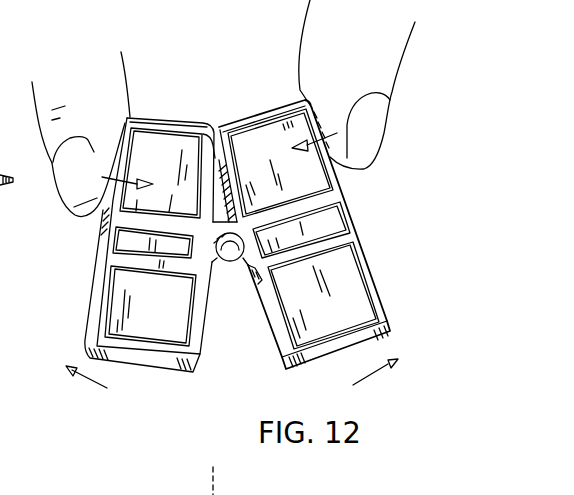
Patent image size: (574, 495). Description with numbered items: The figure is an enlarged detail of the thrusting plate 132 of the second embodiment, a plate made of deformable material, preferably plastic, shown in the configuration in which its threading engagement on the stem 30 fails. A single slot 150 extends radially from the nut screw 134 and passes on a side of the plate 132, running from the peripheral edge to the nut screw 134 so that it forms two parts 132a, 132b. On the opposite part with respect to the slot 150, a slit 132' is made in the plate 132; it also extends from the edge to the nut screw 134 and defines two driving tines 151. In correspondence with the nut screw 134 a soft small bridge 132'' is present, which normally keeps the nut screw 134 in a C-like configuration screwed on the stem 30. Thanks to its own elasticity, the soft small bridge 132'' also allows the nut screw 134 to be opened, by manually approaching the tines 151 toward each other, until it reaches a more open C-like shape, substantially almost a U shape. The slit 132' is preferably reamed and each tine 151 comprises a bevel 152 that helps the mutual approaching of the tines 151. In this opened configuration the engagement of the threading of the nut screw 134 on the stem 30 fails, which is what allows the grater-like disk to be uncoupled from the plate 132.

The stem 30 is at (17, 210).
The thrusting plate 132 is at (215, 217).
The first part of the plate 132a is at (132, 289).
The second part of the plate 132b is at (350, 312).
The slit 132' is at (254, 145).
The soft small bridge 132'' is at (337, 223).
The nut screw 134 is at (112, 243).
The slot 150 is at (230, 307).
The driving tines 151 is at (155, 140).
The bevel 152 is at (213, 155).